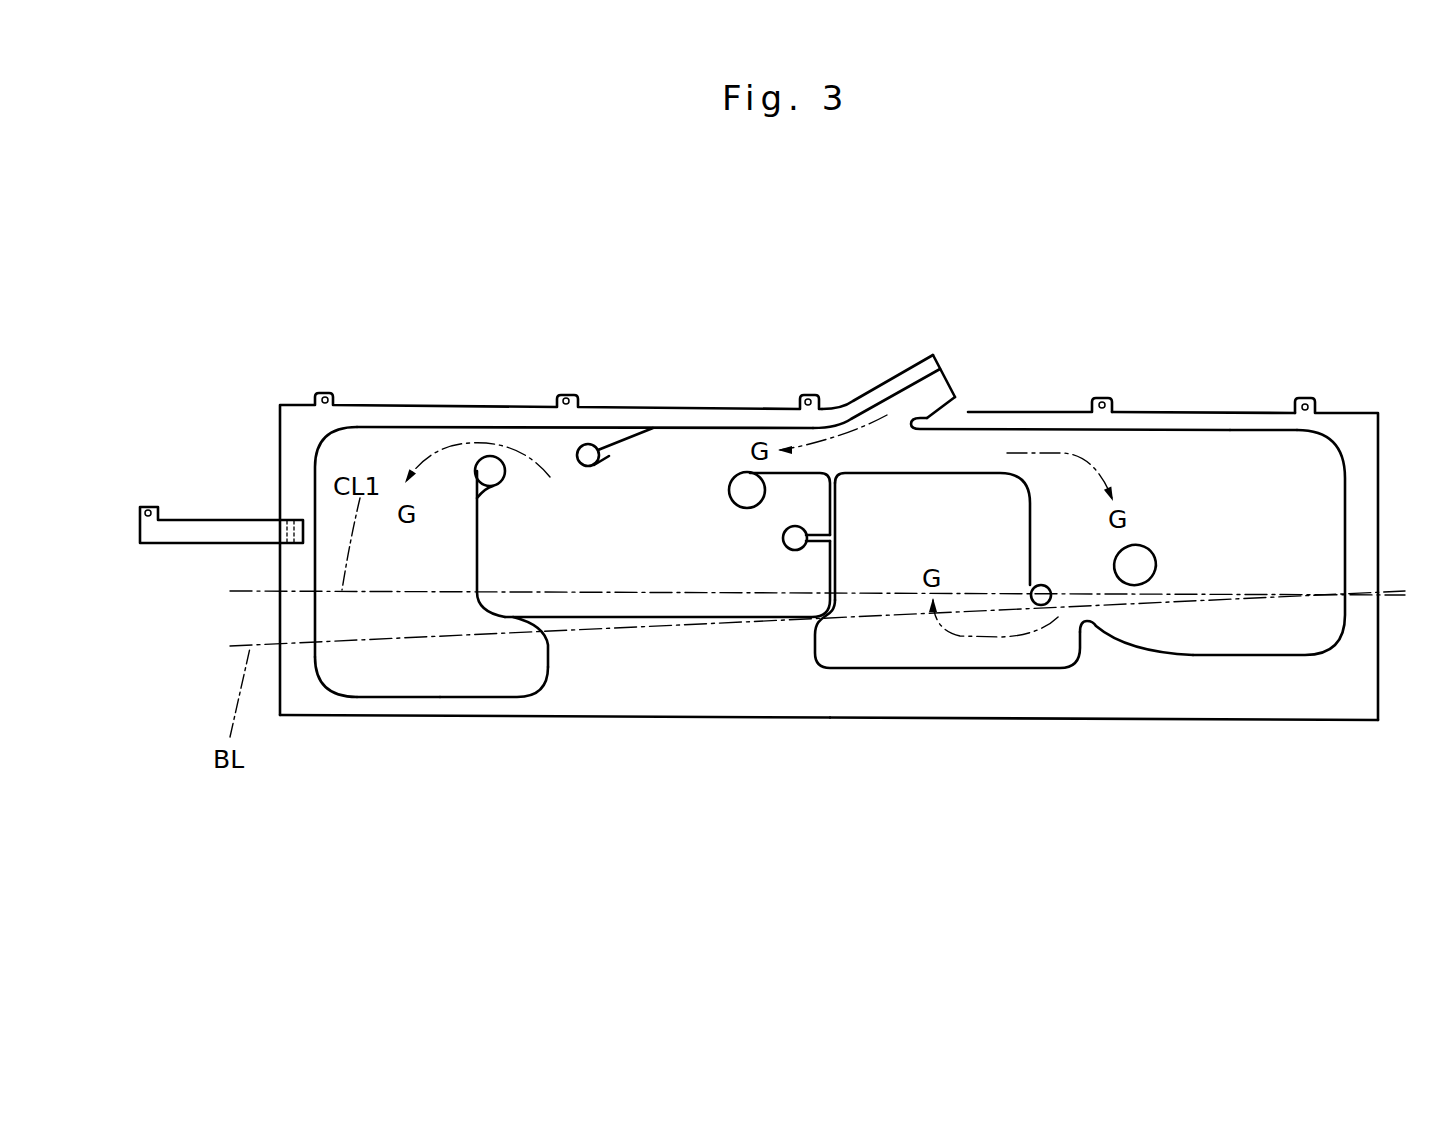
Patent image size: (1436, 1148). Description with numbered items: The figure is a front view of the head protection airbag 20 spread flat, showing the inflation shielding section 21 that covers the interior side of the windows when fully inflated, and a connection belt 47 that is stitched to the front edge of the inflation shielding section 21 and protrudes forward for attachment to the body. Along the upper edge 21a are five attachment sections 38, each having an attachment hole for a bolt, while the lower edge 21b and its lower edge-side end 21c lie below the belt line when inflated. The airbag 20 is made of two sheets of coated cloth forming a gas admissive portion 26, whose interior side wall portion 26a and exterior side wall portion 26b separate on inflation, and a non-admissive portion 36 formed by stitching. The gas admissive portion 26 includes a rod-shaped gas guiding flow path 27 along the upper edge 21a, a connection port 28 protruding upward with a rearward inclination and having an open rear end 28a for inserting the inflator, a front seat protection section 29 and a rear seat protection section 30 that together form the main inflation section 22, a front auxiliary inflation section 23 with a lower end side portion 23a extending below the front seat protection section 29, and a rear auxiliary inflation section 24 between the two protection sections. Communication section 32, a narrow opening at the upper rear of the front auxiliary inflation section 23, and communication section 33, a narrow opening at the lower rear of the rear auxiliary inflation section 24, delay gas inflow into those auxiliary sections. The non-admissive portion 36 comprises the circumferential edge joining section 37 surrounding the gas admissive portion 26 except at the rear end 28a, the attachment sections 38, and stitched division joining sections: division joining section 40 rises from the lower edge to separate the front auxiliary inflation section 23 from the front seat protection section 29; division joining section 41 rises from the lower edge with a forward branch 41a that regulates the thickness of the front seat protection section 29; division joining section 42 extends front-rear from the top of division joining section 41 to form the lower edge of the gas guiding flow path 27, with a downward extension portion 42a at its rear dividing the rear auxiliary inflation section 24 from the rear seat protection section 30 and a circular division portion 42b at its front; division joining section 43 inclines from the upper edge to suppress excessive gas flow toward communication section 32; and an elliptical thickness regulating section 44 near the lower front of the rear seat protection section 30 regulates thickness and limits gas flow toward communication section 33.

The airbag 20 is at (1280, 267).
The inflation shielding section 21 is at (1235, 737).
The upper edge 21a is at (1182, 413).
The lower edge 21b is at (1140, 722).
The lower edge-side end 21c is at (1104, 719).
The main inflation section 22 is at (815, 530).
The front auxiliary inflation section 23 is at (403, 705).
The lower end side portion 23a is at (513, 683).
The rear auxiliary inflation section 24 is at (890, 675).
The gas admissive portion 26 is at (815, 530).
The interior side wall portion 26a is at (333, 675).
The exterior side wall portion 26b is at (360, 683).
The gas guiding flow path 27 is at (998, 440).
The connection port 28 is at (897, 397).
The rear end 28a is at (947, 373).
The front seat protection section 29 is at (683, 605).
The rear seat protection section 30 is at (1297, 642).
The communication section 32 is at (497, 435).
The communication section 33 is at (1063, 625).
The non-admissive portion 36 is at (845, 445).
The circumferential edge joining section 37 is at (1268, 432).
The attachment section 38 is at (328, 395).
The division joining section 40 is at (477, 582).
The division joining section 41 is at (833, 587).
The branch 41a is at (813, 540).
The division joining section 42 is at (952, 475).
The extension portion 42a is at (1032, 557).
The circular division portion 42b is at (737, 495).
The division joining section 43 is at (612, 456).
The thickness regulating section 44 is at (1147, 563).
The connection belt 47 is at (198, 527).